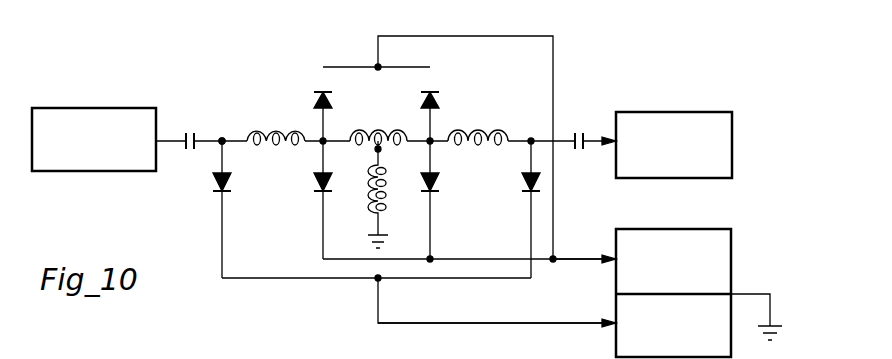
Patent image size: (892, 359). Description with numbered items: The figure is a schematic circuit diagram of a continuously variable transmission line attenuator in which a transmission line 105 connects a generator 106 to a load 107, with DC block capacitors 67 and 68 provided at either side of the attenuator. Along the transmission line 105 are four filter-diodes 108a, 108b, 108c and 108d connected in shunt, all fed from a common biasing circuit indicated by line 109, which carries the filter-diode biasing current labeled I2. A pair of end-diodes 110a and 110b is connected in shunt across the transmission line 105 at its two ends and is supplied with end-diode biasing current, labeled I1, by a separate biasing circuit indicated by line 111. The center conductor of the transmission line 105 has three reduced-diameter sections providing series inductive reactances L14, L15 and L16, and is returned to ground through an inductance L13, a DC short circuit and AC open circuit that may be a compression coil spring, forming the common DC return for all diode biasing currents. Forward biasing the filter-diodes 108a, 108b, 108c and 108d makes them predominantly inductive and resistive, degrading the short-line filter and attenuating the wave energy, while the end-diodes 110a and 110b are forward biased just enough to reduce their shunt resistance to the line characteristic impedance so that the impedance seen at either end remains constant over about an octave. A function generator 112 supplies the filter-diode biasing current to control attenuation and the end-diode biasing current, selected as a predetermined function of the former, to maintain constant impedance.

The generator 106 is at (122, 108).
The DC block capacitor 67 is at (188, 131).
The transmission line 105 is at (221, 139).
The series inductive reactance L14 is at (278, 130).
The series inductive reactance L15 is at (376, 130).
The series inductive reactance L16 is at (474, 130).
The inductance L13 is at (369, 203).
The filter-diode 108a is at (331, 104).
The filter-diode 108b is at (315, 191).
The filter-diode 108c is at (437, 104).
The filter-diode 108d is at (436, 176).
The end-diode 110a is at (216, 192).
The end-diode 110b is at (523, 191).
The DC block capacitor 68 is at (577, 131).
The load 107 is at (703, 112).
The common biasing circuit line 109 is at (570, 258).
The end-diode biasing circuit line 111 is at (508, 322).
The function generator 112 is at (703, 229).
The shunt diode control current I2 is at (571, 277).
The end diode control current I1 is at (567, 337).